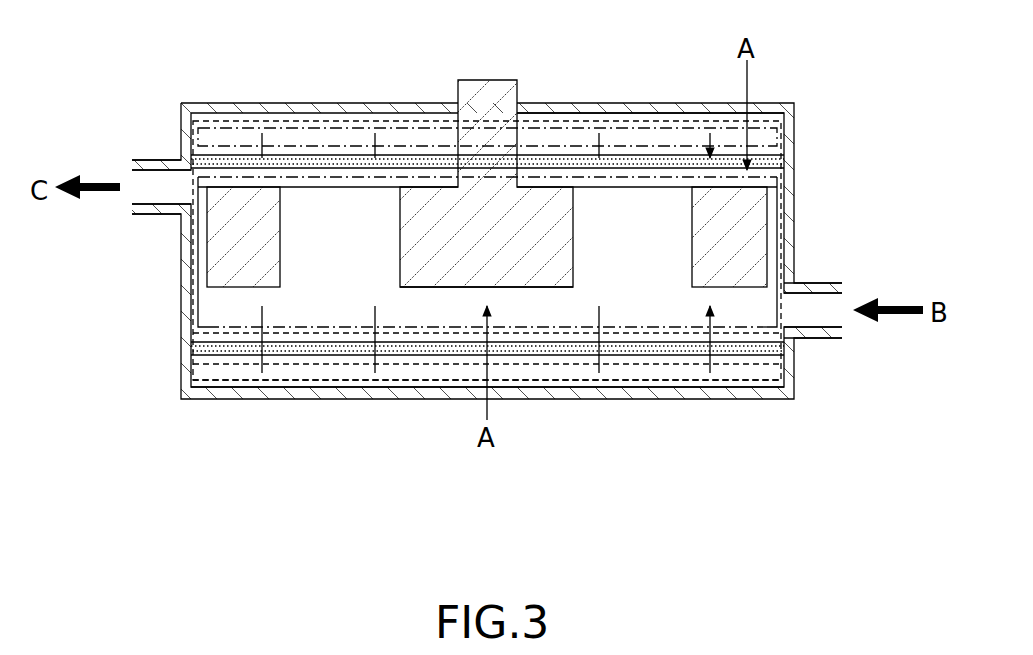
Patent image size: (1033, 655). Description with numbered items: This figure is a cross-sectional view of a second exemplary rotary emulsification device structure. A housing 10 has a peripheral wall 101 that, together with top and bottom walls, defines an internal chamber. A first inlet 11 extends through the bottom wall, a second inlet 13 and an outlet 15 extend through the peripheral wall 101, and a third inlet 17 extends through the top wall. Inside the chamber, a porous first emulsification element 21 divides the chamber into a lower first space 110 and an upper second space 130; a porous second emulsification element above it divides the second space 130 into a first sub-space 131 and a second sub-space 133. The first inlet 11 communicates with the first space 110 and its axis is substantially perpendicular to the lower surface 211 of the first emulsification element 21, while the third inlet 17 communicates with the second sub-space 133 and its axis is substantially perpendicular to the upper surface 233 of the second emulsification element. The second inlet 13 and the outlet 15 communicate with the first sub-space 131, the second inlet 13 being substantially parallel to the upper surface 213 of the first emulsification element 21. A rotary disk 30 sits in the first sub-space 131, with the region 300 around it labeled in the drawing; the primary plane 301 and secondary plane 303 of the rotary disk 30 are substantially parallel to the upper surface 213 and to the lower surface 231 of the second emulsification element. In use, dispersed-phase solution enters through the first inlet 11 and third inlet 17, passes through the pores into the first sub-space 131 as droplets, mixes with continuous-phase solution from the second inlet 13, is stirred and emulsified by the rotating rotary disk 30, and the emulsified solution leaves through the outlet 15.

The housing 10 is at (716, 411).
The peripheral wall 101 is at (797, 128).
The first inlet 11 is at (474, 393).
The first space 110 is at (784, 364).
The second inlet 13 is at (826, 305).
The outlet 15 is at (140, 183).
The third inlet 17 is at (762, 108).
The second space 130 is at (197, 334).
The first sub-space 131 is at (197, 260).
The second sub-space 133 is at (207, 128).
The first emulsification element 21 is at (208, 362).
The lower surface 211 is at (328, 353).
The upper surface 213 is at (582, 340).
The lower surface 231 is at (299, 170).
The upper surface 233 is at (667, 152).
The rotary disk 30 is at (776, 205).
The heat exchange chamber 300 is at (353, 205).
The primary plane 301 is at (537, 187).
The secondary plane 303 is at (443, 288).